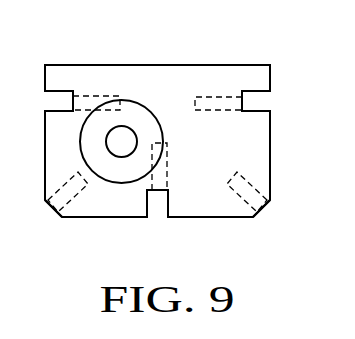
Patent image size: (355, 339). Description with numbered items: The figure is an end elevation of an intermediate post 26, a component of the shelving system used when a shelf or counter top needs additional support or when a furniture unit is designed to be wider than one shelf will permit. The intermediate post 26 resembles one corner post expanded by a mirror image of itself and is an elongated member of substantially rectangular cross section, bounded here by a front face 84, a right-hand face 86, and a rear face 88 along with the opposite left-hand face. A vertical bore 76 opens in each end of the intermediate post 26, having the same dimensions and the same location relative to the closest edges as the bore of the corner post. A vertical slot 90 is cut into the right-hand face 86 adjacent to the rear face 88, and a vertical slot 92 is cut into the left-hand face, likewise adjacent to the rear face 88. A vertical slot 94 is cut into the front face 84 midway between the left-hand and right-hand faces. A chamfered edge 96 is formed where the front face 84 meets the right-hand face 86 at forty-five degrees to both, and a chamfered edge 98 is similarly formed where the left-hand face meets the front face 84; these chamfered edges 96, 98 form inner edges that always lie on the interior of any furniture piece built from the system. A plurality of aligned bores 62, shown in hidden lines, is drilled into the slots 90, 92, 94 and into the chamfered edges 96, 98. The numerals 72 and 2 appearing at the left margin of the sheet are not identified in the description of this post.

The intermediate post 26 is at (235, 65).
The rear face 88 is at (118, 65).
The right-hand face 86 is at (270, 143).
The front face 84 is at (98, 217).
The vertical slot 90 is at (252, 97).
The vertical slot 92 is at (58, 99).
The vertical bore 76 is at (127, 126).
The vertical slot 94 is at (167, 202).
The chamfered edge 96 is at (265, 204).
The chamfered edge 98 is at (55, 214).
The side edge 72 is at (22, 155).
The edge 2 is at (45, 197).
The aligned bores 62 is at (90, 93).